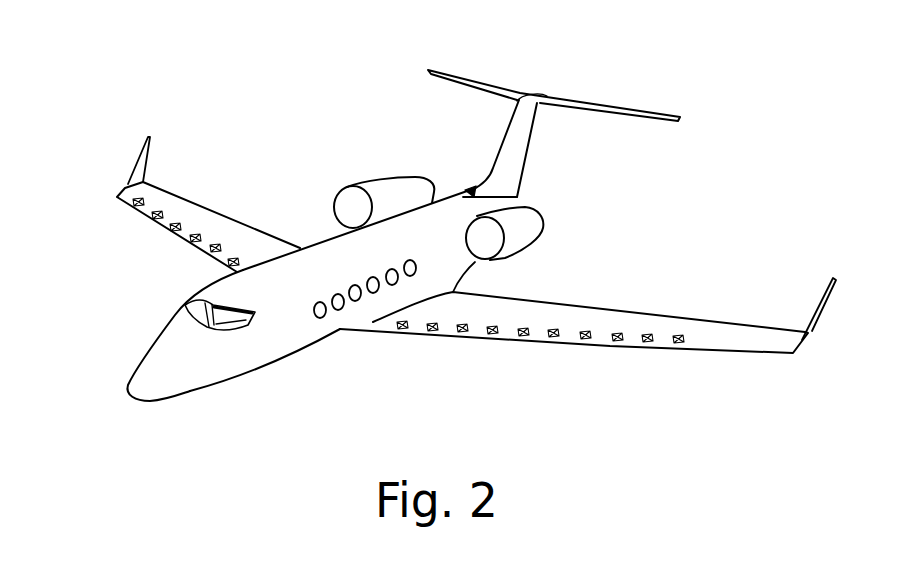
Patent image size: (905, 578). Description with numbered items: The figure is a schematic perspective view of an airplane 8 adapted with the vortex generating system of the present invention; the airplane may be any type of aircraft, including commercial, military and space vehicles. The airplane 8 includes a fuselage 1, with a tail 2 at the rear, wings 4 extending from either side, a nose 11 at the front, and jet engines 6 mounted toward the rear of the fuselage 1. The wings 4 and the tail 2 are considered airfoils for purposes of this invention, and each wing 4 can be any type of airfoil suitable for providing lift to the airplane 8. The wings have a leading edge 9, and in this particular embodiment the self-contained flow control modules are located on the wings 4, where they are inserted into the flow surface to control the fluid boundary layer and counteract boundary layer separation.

The fuselage 1 is at (247, 370).
The tail 2 is at (532, 157).
The wings 4 is at (188, 200).
The jet engines 6 is at (407, 176).
The airplane 8 is at (325, 130).
The leading edge 9 is at (168, 235).
The nose 11 is at (178, 383).